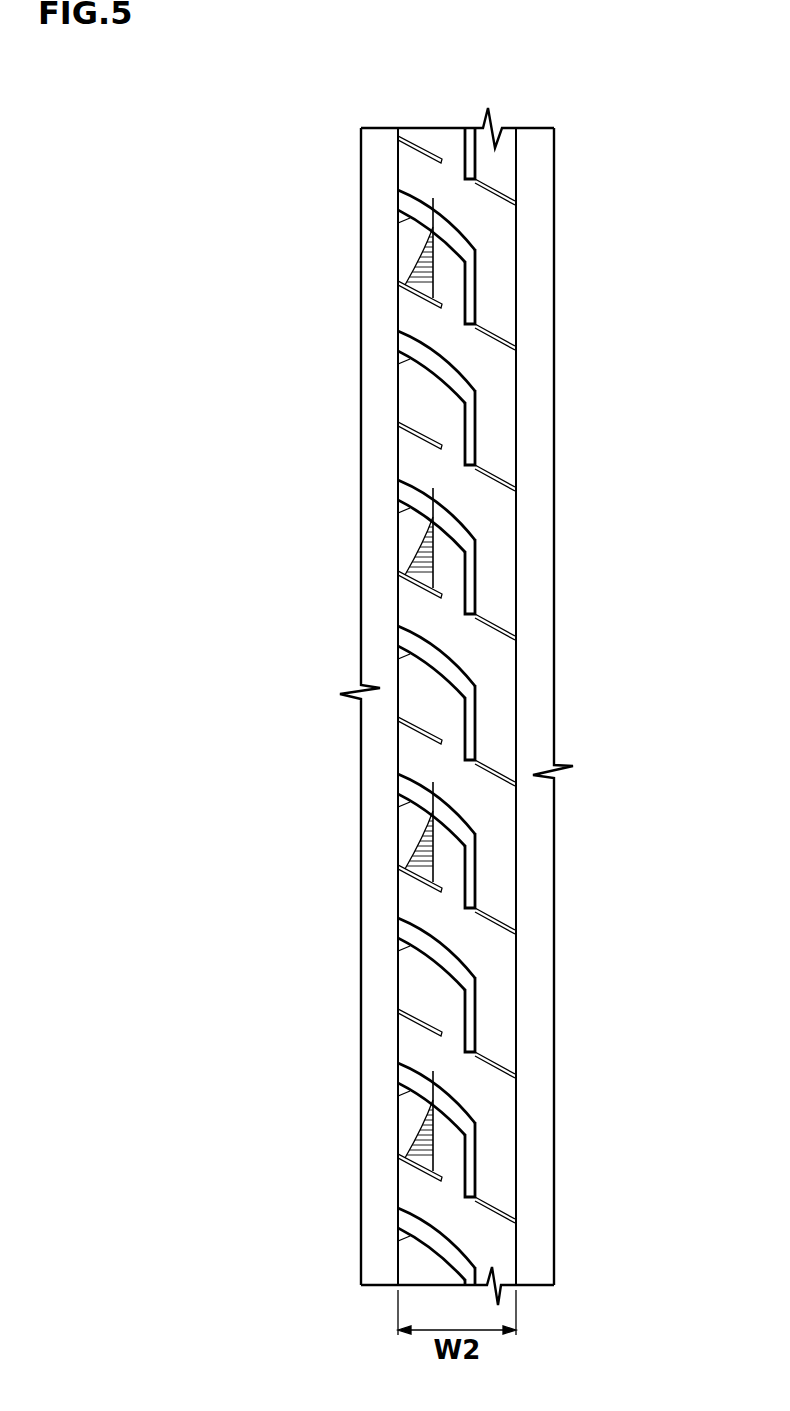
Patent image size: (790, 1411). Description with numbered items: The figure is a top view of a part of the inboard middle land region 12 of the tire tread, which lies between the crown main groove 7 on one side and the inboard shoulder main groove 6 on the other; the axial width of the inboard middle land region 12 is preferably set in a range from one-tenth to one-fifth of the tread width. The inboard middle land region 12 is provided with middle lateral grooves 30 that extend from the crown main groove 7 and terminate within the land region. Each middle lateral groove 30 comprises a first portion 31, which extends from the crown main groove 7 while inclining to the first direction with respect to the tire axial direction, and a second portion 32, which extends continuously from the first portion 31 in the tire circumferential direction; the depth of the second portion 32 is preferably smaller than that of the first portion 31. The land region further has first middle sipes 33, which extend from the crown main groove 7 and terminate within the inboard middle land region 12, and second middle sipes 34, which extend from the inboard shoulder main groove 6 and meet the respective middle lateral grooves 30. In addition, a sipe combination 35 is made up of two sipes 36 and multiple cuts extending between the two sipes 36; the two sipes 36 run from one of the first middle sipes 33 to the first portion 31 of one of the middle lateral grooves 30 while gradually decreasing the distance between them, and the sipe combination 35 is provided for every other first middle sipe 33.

The inboard shoulder main groove 6 is at (537, 167).
The crown main groove 7 is at (380, 167).
The inboard middle land region 12 is at (455, 188).
The middle lateral groove 30 is at (493, 693).
The first portion 31 is at (450, 668).
The second portion 32 is at (472, 727).
The first middle sipe 33 is at (420, 290).
The second middle sipe 34 is at (493, 332).
The sipe combination 35 is at (423, 564).
The sipe 36 is at (427, 825).